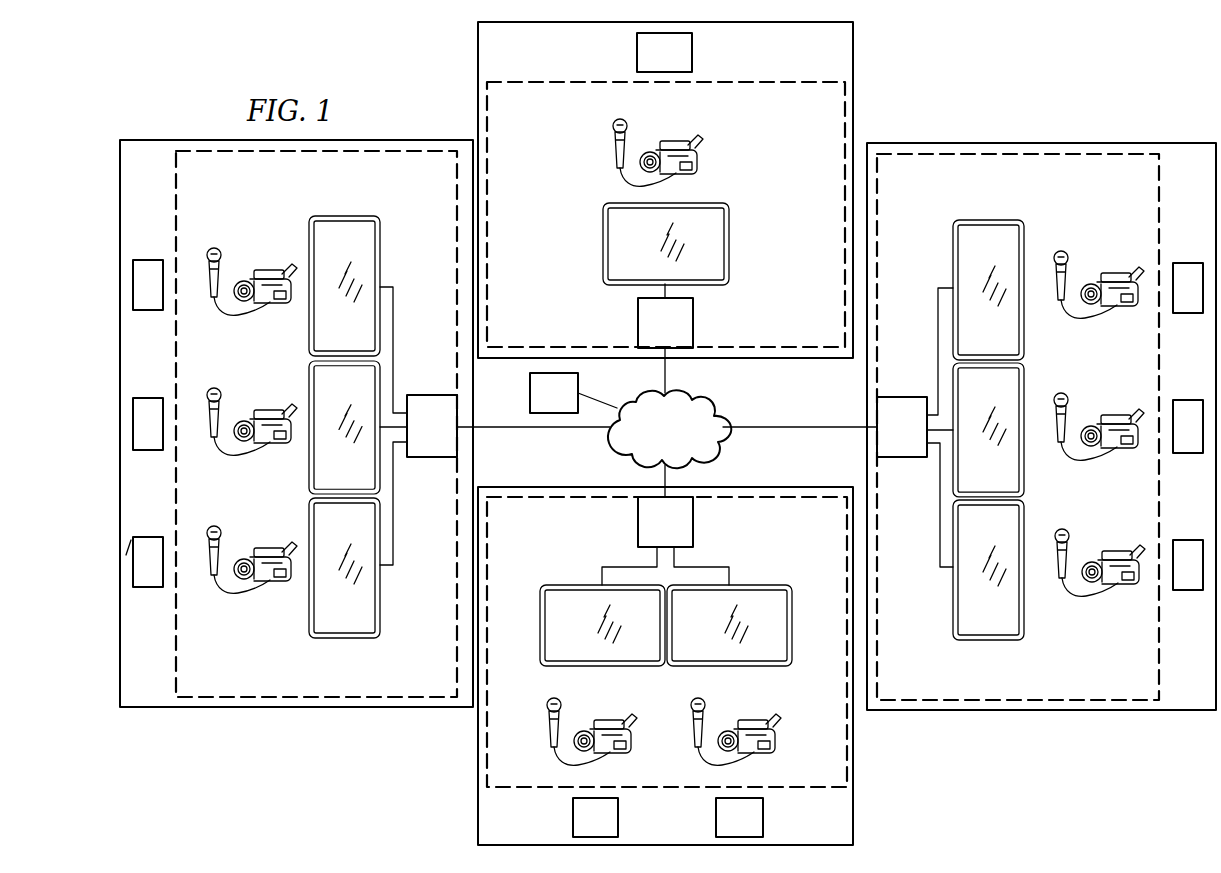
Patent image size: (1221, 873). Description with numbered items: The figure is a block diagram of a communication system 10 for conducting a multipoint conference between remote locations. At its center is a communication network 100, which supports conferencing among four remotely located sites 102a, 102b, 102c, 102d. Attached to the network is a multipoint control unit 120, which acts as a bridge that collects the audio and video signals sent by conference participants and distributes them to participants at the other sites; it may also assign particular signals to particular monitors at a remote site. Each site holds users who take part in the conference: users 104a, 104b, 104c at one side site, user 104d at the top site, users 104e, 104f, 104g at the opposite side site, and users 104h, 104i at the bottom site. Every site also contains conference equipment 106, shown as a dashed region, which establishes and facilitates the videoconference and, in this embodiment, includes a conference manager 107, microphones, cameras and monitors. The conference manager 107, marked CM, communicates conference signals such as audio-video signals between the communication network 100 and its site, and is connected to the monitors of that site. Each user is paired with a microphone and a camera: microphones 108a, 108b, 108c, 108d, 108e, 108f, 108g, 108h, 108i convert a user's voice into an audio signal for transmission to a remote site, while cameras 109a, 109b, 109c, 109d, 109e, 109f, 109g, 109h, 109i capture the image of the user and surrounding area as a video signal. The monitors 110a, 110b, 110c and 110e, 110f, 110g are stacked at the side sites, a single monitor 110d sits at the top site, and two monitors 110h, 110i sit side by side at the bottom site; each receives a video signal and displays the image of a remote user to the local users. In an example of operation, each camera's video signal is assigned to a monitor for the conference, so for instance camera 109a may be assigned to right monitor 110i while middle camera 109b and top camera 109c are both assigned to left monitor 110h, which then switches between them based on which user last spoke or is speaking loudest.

The communication system 10 is at (363, 781).
The communication network 100 is at (746, 444).
The site 102a is at (1106, 711).
The site 102b is at (860, 116).
The site 102c is at (227, 710).
The site 102d is at (858, 783).
The user 104a is at (1190, 590).
The user 104b is at (1190, 453).
The user 104c is at (1190, 263).
The user 104d is at (637, 52).
The user 104e is at (147, 260).
The user 104f is at (147, 450).
The user 104g is at (147, 587).
The user 104h is at (573, 818).
The user 104i is at (763, 818).
The conference equipment 106 is at (432, 221).
The conference manager 107 is at (430, 395).
The microphone 108a is at (1069, 532).
The microphone 108b is at (1061, 393).
The microphone 108c is at (1061, 251).
The microphone 108d is at (613, 125).
The microphone 108e is at (214, 248).
The microphone 108f is at (214, 388).
The microphone 108g is at (214, 526).
The microphone 108h is at (561, 703).
The microphone 108i is at (705, 703).
The camera 109a is at (1116, 588).
The camera 109b is at (1122, 412).
The camera 109c is at (1122, 272).
The camera 109d is at (698, 160).
The camera 109e is at (271, 270).
The camera 109f is at (272, 410).
The camera 109g is at (270, 581).
The camera 109h is at (626, 745).
The camera 109i is at (768, 745).
The monitor 110a is at (1003, 637).
The monitor 110b is at (1024, 470).
The monitor 110c is at (1000, 220).
The monitor 110d is at (729, 240).
The monitor 110e is at (333, 216).
The monitor 110f is at (309, 466).
The monitor 110g is at (335, 636).
The monitor 110h is at (590, 585).
The monitor 110i is at (778, 585).
The multipoint control unit 120 is at (530, 392).